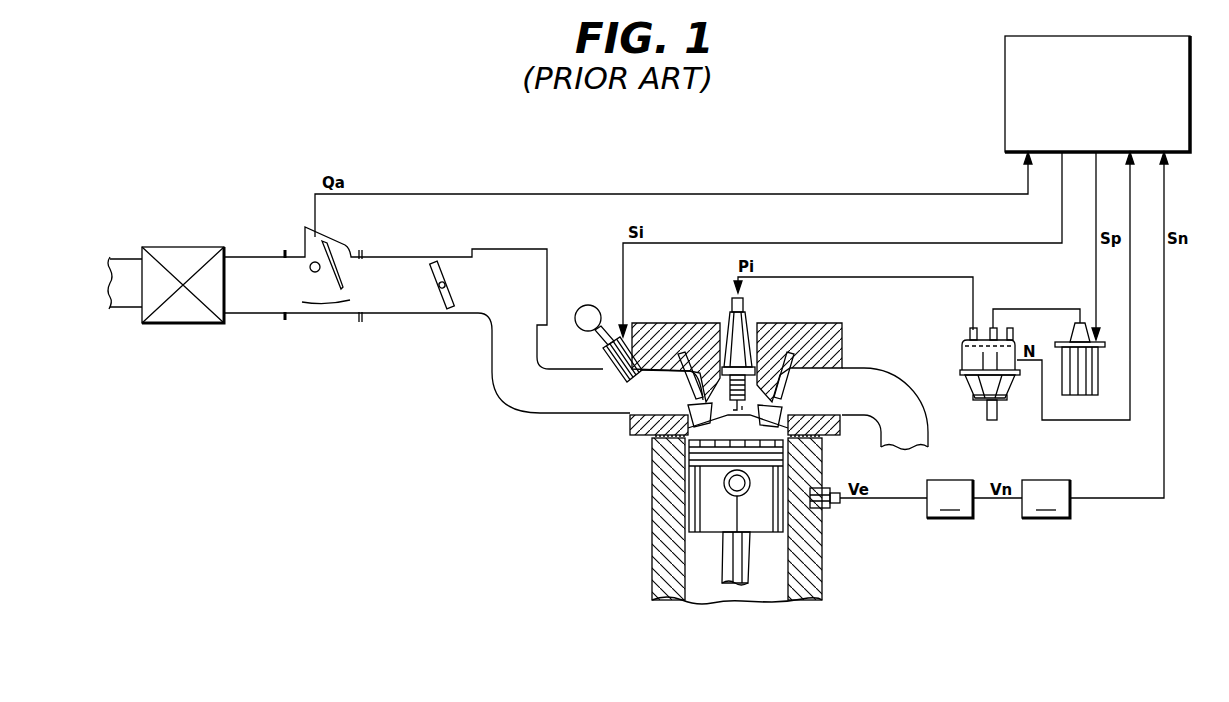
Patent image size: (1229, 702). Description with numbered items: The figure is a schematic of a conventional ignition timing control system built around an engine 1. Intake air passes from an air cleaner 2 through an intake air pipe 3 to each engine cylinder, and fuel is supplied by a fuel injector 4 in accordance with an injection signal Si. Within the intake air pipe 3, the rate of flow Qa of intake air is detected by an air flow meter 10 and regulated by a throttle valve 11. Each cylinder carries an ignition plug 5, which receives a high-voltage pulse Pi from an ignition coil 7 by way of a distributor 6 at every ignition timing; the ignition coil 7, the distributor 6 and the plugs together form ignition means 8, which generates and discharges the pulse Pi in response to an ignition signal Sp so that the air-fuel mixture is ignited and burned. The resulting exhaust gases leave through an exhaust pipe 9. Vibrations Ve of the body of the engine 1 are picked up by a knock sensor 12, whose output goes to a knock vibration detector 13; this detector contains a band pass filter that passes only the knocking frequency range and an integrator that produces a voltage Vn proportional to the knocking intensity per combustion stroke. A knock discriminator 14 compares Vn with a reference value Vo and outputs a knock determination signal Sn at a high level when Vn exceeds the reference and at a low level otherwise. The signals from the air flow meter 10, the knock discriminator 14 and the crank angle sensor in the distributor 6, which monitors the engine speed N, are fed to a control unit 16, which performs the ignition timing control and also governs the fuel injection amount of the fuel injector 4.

The engine 1 is at (753, 619).
The air cleaner 2 is at (205, 323).
The intake air pipe 3 is at (541, 418).
The fuel injector 4 is at (600, 352).
The ignition plug 5 is at (727, 320).
The distributor 6 is at (970, 384).
The ignition coil 7 is at (1092, 390).
The ignition means 8 is at (1020, 388).
The exhaust pipe 9 is at (868, 378).
The air flow meter 10 is at (322, 283).
The throttle valve 11 is at (432, 270).
The knock sensor 12 is at (830, 510).
The knock vibration detector 13 is at (970, 355).
The knock discriminator 14 is at (1046, 499).
The control unit 16 is at (1005, 50).